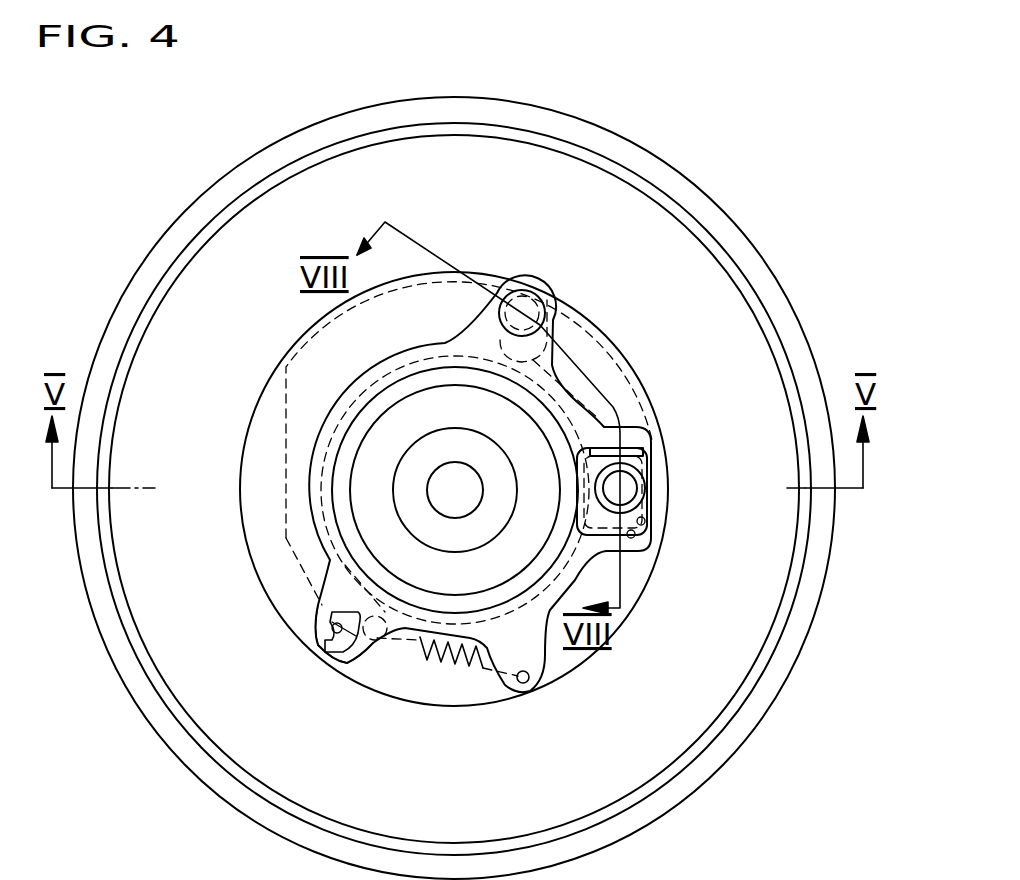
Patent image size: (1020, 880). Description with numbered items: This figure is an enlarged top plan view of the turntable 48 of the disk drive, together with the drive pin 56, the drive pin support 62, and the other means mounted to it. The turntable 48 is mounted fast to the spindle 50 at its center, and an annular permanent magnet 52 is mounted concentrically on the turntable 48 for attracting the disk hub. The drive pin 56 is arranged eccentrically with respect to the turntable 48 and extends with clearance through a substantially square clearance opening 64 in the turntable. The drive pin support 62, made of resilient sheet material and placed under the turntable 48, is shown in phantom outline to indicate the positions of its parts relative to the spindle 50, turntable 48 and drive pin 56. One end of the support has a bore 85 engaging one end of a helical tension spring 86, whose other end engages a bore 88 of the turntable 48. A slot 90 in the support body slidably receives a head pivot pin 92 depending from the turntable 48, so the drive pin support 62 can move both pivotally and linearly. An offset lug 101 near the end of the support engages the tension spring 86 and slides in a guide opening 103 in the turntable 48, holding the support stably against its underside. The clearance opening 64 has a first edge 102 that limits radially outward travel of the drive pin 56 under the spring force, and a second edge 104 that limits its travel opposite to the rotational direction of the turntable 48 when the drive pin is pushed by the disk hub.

The turntable 48 is at (690, 250).
The spindle 50 is at (440, 482).
The permanent magnet 52 is at (612, 642).
The drive pin 56 is at (633, 477).
The drive pin support 62 is at (282, 536).
The opening 64 is at (636, 533).
The bore 85 is at (376, 650).
The helical tension spring 86 is at (463, 668).
The bore 88 is at (528, 684).
The slot 90 is at (553, 335).
The head pivot pin 92 is at (522, 295).
The lug 101 is at (334, 650).
The first edge 102 is at (646, 522).
The guide opening 103 is at (330, 628).
The second edge 104 is at (622, 450).